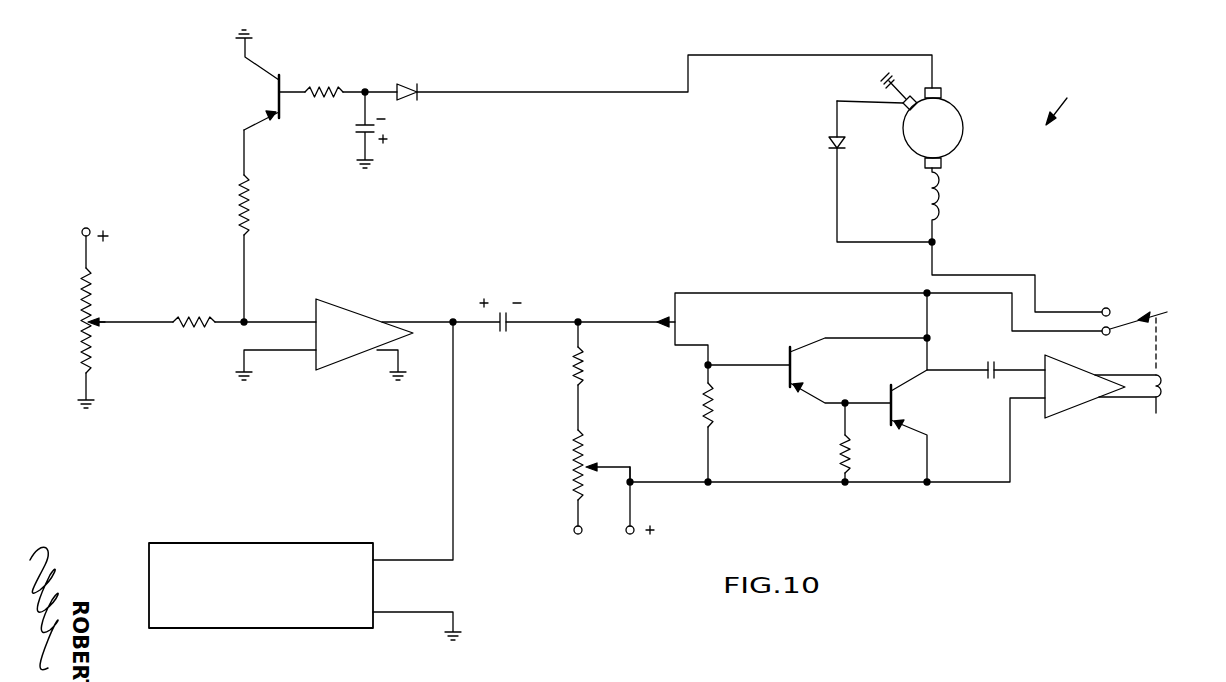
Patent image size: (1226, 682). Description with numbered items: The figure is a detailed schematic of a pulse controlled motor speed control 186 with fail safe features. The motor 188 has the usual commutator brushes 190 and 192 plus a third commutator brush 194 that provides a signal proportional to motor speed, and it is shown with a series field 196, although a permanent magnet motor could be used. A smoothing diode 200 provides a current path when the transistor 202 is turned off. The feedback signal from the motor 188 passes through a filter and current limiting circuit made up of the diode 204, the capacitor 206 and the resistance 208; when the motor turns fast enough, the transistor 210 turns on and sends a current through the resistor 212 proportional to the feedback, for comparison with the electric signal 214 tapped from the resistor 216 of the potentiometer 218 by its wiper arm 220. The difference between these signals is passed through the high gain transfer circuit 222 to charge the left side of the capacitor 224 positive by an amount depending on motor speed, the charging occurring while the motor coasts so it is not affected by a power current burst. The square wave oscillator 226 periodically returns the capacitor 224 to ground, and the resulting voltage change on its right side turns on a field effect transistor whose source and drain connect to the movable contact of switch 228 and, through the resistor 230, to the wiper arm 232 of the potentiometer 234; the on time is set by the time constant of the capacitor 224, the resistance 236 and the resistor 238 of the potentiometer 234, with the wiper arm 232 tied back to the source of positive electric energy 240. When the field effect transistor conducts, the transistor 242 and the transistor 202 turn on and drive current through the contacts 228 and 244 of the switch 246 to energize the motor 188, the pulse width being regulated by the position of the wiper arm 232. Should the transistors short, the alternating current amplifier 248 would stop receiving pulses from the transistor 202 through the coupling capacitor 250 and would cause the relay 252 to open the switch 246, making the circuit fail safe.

The pulse controlled motor speed control 186 is at (1079, 104).
The motor 188 is at (955, 145).
The commutator brush 190 is at (903, 105).
The commutator brush 192 is at (924, 163).
The third commutator brush 194 is at (942, 93).
The series field 196 is at (940, 200).
The smoothing diode 200 is at (827, 140).
The transistor 202 is at (893, 395).
The diode 204 is at (405, 85).
The capacitor 206 is at (357, 130).
The resistance 208 is at (320, 85).
The transistor 210 is at (279, 92).
The resistor 212 is at (250, 215).
The electric signal 214 is at (195, 330).
The resistor 216 is at (82, 347).
The potentiometer 218 is at (92, 272).
The wiper arm 220 is at (106, 318).
The high gain transfer circuit 222 is at (340, 365).
The capacitor 224 is at (500, 333).
The square wave oscillator 226 is at (305, 628).
The movable contact of switch 228 is at (1146, 322).
The resistor 230 is at (703, 397).
The wiper arm 232 is at (615, 466).
The potentiometer 234 is at (572, 478).
The resistance 236 is at (572, 378).
The resistor 238 is at (572, 440).
The source of positive electric energy 240 is at (625, 533).
The transistor 242 is at (810, 358).
The switch contact 244 is at (1124, 311).
The switch 246 is at (1106, 308).
The alternating current amplifier 248 is at (1076, 411).
The coupling capacitor 250 is at (1003, 356).
The relay 252 is at (1160, 380).